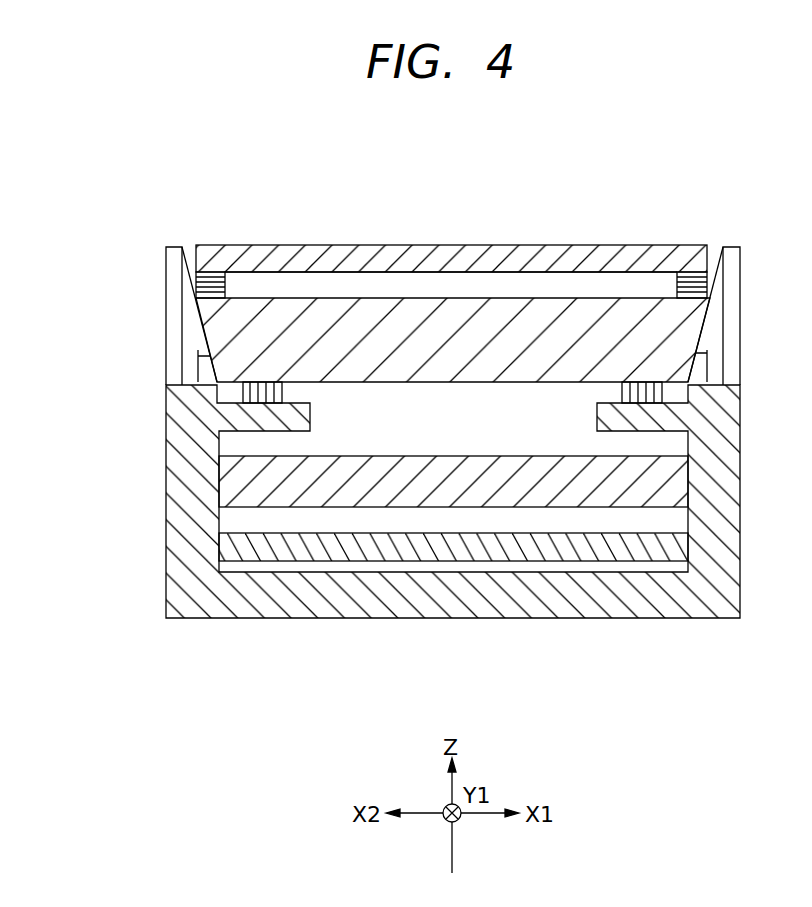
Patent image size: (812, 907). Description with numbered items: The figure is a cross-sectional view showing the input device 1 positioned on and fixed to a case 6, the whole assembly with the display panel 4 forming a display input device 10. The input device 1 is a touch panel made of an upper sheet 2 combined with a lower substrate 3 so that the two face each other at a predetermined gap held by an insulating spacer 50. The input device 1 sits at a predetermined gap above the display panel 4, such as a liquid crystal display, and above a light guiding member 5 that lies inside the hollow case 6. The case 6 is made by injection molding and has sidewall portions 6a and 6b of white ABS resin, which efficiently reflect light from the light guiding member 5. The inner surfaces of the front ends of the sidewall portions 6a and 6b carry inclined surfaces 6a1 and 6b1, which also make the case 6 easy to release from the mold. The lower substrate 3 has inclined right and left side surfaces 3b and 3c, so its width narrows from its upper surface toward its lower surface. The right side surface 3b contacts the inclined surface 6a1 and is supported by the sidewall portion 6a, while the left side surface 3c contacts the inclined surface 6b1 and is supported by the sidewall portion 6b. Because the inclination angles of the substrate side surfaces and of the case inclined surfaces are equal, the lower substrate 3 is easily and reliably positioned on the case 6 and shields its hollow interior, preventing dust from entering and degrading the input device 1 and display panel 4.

The display input device 10 is at (327, 165).
The input device 1 is at (646, 201).
The upper sheet 2 is at (487, 246).
The insulating spacer 50 is at (227, 285).
The lower substrate 3 is at (493, 372).
The right side surface 3b is at (690, 383).
The left side surface 3c is at (212, 383).
The display panel 4 is at (530, 456).
The light guiding member 5 is at (540, 536).
The case 6 is at (683, 620).
The sidewall portion 6a is at (733, 498).
The sidewall portion 6b is at (166, 512).
The inclined surface 6a1 is at (719, 246).
The inclined surface 6b1 is at (189, 246).